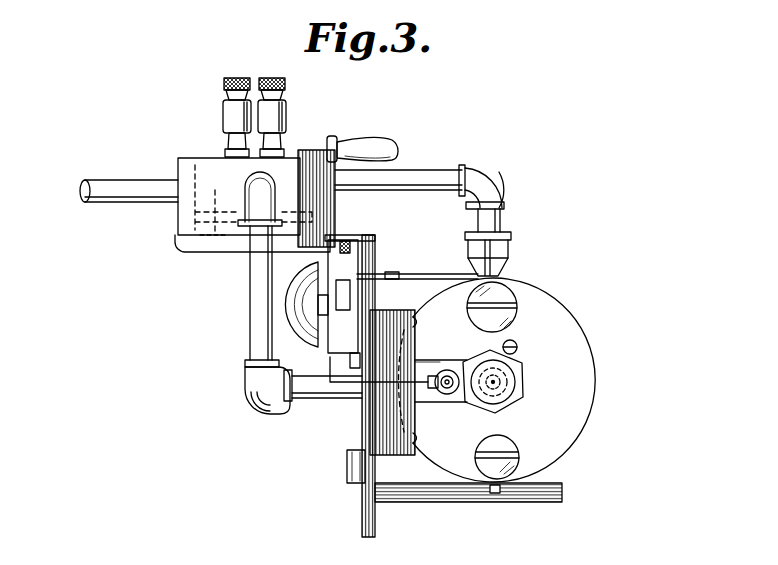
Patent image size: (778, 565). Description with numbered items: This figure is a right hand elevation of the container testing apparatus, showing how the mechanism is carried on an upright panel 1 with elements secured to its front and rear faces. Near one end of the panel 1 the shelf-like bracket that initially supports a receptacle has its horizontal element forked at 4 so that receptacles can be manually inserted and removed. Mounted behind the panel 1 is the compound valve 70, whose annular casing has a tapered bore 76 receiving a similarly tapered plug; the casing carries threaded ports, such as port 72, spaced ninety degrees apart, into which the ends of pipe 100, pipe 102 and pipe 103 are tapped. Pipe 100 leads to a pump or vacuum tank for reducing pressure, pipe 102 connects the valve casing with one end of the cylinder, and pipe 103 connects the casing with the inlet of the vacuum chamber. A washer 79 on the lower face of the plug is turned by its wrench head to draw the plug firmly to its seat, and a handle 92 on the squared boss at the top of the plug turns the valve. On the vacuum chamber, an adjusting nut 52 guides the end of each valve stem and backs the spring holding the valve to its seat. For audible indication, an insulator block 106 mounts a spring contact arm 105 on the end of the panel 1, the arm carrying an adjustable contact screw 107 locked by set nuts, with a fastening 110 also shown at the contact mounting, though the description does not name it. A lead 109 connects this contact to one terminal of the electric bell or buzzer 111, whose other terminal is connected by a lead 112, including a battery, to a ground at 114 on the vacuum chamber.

The panel 1 is at (378, 533).
The forked horizontal element of bracket 4 is at (561, 486).
The adjusting nut 52 is at (506, 291).
The compound valve 70 is at (176, 226).
The threaded port 72 is at (178, 177).
The tapered bore 76 is at (215, 158).
The washer 79 is at (208, 238).
The handle 92 is at (362, 146).
The pipe 100 is at (126, 204).
The pipe 102 is at (456, 176).
The pipe 103 is at (250, 315).
The spring contact arm 105 is at (440, 362).
The insulator block 106 is at (380, 432).
The adjustable contact screw 107 is at (517, 378).
The lead 109 is at (341, 398).
The bolt 110 is at (449, 394).
The electric bell or buzzer 111 is at (300, 338).
The lead 112 is at (396, 274).
The ground 114 is at (406, 276).